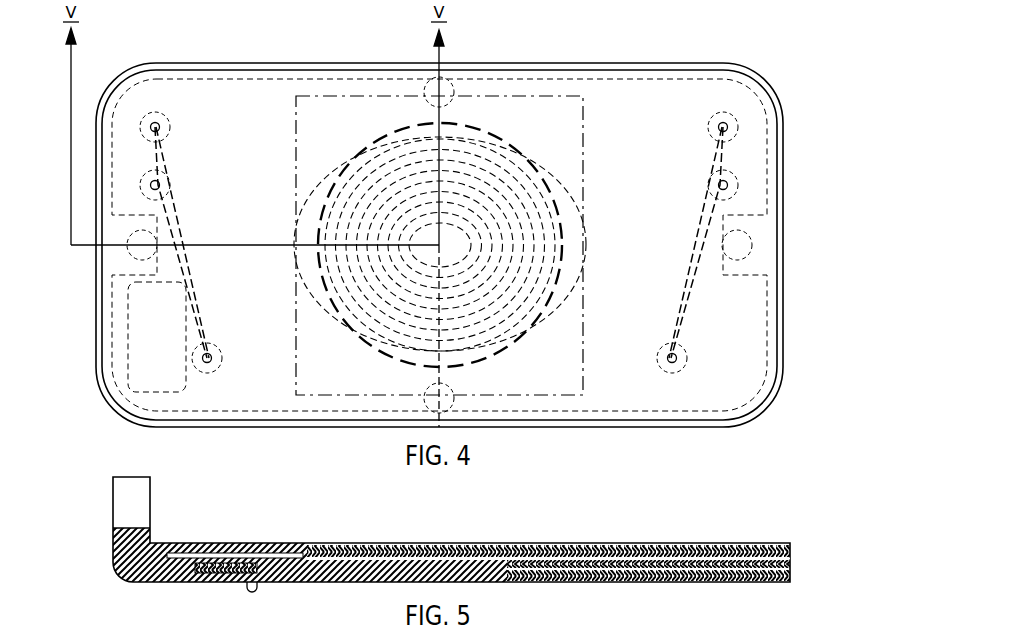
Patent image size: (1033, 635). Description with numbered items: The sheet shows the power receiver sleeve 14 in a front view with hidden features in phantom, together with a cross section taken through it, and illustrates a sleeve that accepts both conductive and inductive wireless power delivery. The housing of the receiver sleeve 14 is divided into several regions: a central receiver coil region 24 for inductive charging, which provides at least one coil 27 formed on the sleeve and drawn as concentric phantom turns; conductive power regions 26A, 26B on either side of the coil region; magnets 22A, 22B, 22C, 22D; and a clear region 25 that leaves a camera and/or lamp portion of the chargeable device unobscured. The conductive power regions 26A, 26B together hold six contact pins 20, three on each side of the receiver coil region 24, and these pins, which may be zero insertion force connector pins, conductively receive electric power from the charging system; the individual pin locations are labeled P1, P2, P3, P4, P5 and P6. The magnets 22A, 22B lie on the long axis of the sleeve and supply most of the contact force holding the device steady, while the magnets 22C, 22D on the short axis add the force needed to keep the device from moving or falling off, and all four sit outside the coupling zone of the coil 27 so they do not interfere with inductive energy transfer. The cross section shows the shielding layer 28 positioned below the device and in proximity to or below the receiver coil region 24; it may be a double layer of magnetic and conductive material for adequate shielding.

In FIG. 4, the receiver sleeve 14 is at (742, 52).
In FIG. 5, the receiver sleeve 14 is at (742, 523).
In FIG. 4, the contact pins 20 is at (183, 266).
In FIG. 4, the magnet 22A is at (455, 88).
In FIG. 4, the magnet 22B is at (455, 400).
In FIG. 4, the magnet 22C is at (123, 250).
In FIG. 5, the magnet 22C is at (227, 556).
In FIG. 4, the magnet 22D is at (735, 262).
In FIG. 4, the receiver coil region 24 is at (335, 96).
In FIG. 4, the clear region 25 is at (143, 362).
In FIG. 4, the conductive power region 26A is at (162, 95).
In FIG. 4, the conductive power region 26B is at (720, 365).
In FIG. 4, the coil 27 is at (480, 143).
In FIG. 5, the coil 27 is at (695, 563).
In FIG. 4, the shielding layer 28 is at (378, 348).
In FIG. 5, the shielding layer 28 is at (275, 548).
In FIG. 4, the contact pad P1 is at (170, 186).
In FIG. 5, the contact pad P1 is at (253, 594).
In FIG. 4, the contact pad P2 is at (167, 121).
In FIG. 4, the contact pad P3 is at (713, 120).
In FIG. 4, the contact pad P4 is at (713, 182).
In FIG. 4, the contact pad P5 is at (218, 347).
In FIG. 4, the contact pad P6 is at (665, 348).